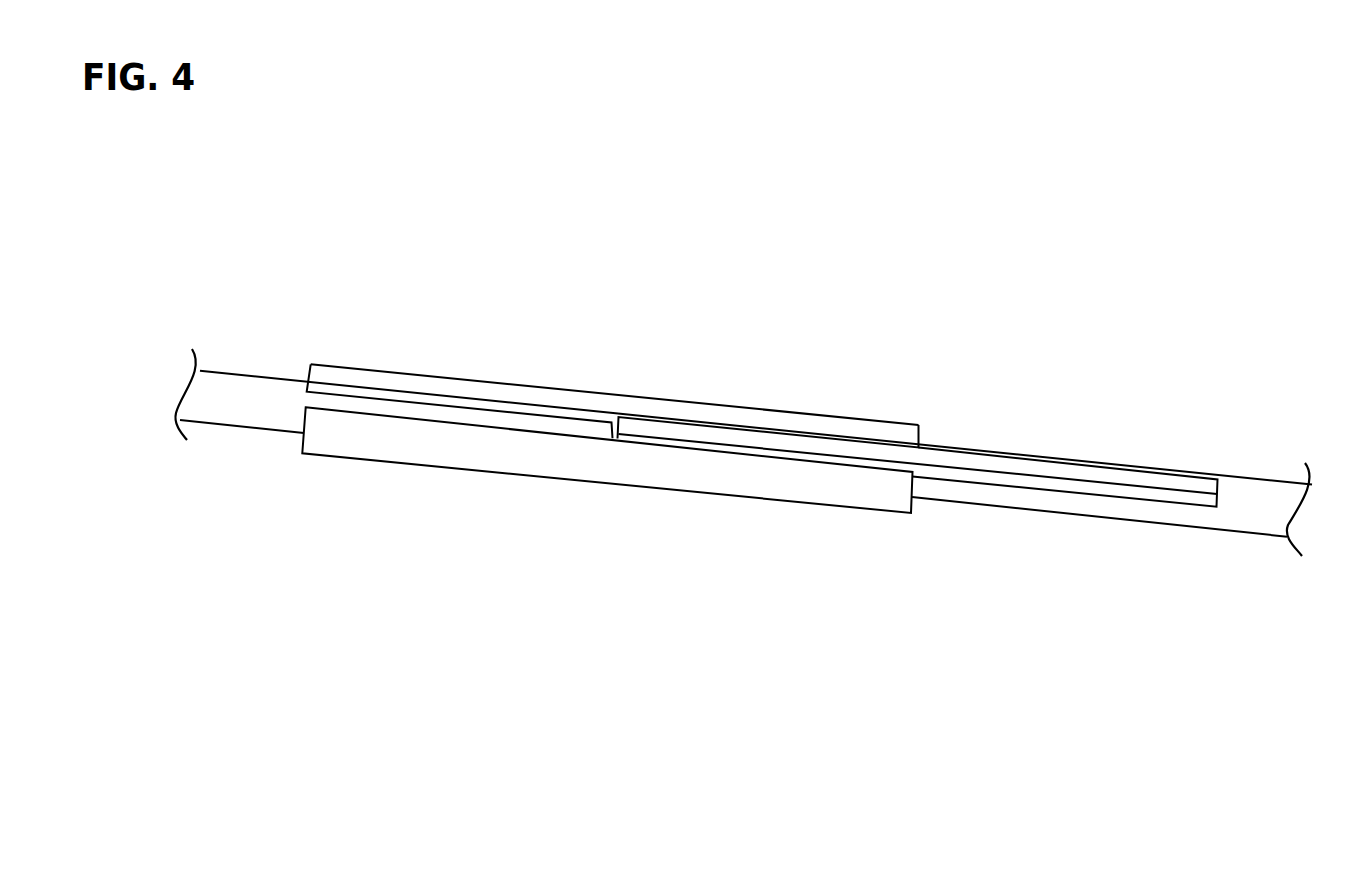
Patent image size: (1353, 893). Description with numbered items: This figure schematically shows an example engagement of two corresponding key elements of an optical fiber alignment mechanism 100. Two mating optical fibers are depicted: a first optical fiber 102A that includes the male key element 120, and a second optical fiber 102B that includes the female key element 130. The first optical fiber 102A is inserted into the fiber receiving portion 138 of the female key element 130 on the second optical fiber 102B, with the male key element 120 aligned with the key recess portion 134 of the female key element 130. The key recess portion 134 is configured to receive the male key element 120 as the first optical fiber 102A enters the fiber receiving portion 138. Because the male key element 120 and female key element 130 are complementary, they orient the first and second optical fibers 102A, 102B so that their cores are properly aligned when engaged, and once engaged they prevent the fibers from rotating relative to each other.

The tube coupling assembly 100 is at (936, 292).
The first optical fiber 102A is at (1258, 485).
The second optical fiber 102B is at (247, 392).
The male key element 120 is at (1063, 466).
The female key element 130 is at (578, 398).
The key recess portion 134 is at (631, 424).
The fiber receiving portion 138 is at (840, 437).